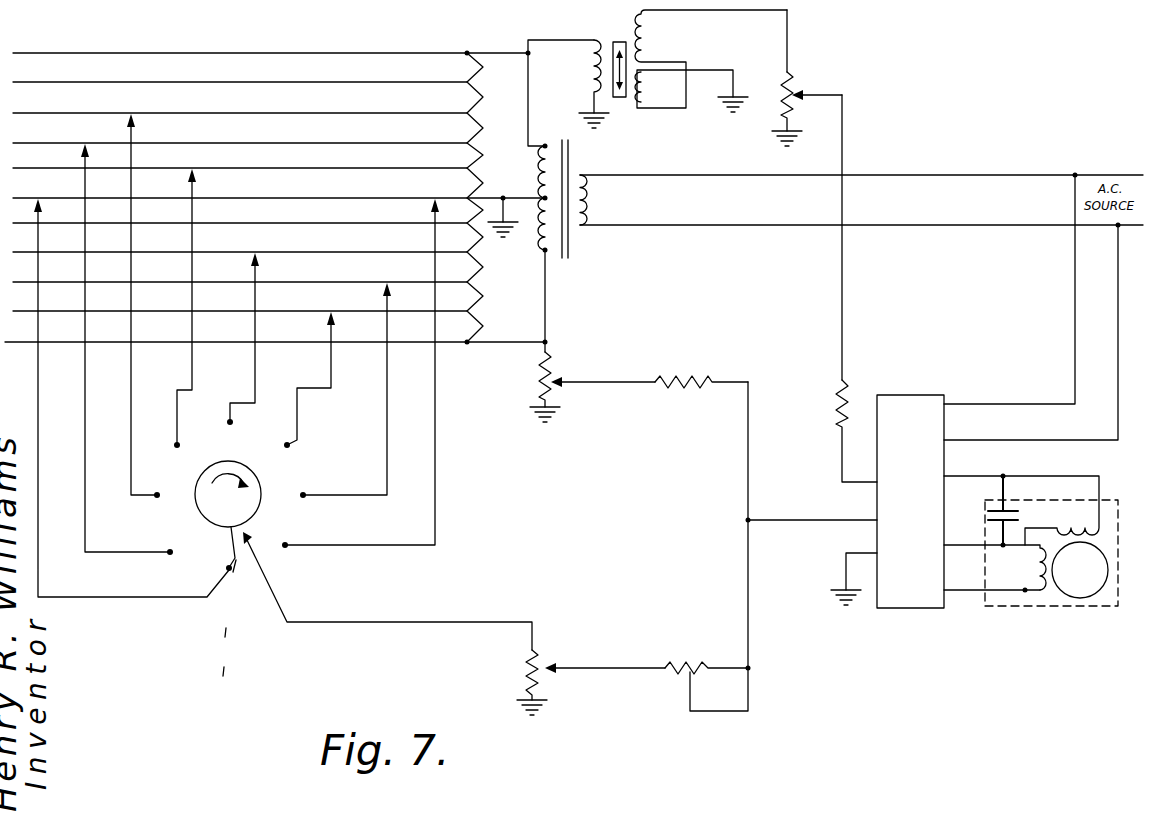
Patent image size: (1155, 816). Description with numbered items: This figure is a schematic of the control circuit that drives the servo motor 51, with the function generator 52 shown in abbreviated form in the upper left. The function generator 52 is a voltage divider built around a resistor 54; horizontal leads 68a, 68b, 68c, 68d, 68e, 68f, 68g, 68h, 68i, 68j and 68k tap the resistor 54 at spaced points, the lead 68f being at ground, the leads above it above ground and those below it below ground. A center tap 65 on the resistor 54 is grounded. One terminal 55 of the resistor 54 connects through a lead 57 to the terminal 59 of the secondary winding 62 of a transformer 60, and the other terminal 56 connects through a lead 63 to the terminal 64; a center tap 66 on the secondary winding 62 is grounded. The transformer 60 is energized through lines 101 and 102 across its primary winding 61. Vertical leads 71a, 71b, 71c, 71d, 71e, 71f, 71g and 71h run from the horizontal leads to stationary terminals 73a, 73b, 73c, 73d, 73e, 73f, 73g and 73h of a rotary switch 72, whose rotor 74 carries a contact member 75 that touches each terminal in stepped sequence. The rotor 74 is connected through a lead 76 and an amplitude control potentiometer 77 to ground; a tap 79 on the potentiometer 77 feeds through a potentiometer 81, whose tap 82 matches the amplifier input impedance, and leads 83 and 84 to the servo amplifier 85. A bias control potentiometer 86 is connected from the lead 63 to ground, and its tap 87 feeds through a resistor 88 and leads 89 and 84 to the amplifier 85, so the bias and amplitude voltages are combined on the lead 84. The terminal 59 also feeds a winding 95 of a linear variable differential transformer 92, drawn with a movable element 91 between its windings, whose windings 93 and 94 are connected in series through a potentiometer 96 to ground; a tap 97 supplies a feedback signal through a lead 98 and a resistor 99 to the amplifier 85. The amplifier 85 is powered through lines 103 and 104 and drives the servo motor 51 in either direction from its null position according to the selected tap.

The servo motor 51 is at (1119, 550).
The function generator 52 is at (302, 46).
The resistor 54 is at (486, 150).
The terminal 55 is at (470, 52).
The terminal 56 is at (472, 341).
The lead 57 is at (528, 103).
The terminal 59 is at (546, 145).
The transformer 60 is at (582, 199).
The primary winding 61 is at (592, 193).
The secondary winding 62 is at (552, 254).
The lead 63 is at (548, 306).
The terminal 64 is at (543, 258).
The center tap 65 is at (502, 196).
The center tap 66 is at (543, 197).
The horizontal lead 68a is at (405, 52).
The horizontal lead 68b is at (395, 81).
The horizontal lead 68c is at (390, 112).
The horizontal lead 68d is at (388, 142).
The horizontal lead 68e is at (385, 167).
The horizontal lead 68f is at (385, 197).
The horizontal lead 68g is at (378, 222).
The horizontal lead 68h is at (376, 251).
The horizontal lead 68i is at (389, 281).
The horizontal lead 68j is at (389, 310).
The horizontal lead 68k is at (386, 341).
The lead 71a is at (40, 386).
The lead 71b is at (87, 388).
The lead 71c is at (133, 371).
The lead 71d is at (194, 372).
The lead 71e is at (258, 370).
The lead 71f is at (333, 369).
The lead 71g is at (389, 375).
The lead 71h is at (437, 372).
The rotary switch 72 is at (228, 494).
The terminal 73a is at (235, 572).
The terminal 73b is at (172, 552).
The terminal 73c is at (158, 496).
The terminal 73d is at (178, 446).
The terminal 73e is at (231, 423).
The terminal 73f is at (289, 446).
The terminal 73g is at (303, 496).
The terminal 73h is at (285, 546).
The rotor 74 is at (260, 482).
The contact member 75 is at (226, 562).
The lead 76 is at (405, 622).
The amplitude control potentiometer 77 is at (527, 670).
The tap 79 is at (554, 665).
The potentiometer 81 is at (689, 664).
The tap 82 is at (692, 686).
The lead 83 is at (750, 576).
The lead 84 is at (796, 520).
The servo amplifier 85 is at (887, 501).
The bias control potentiometer 86 is at (540, 372).
The tap 87 is at (560, 380).
The resistor 88 is at (682, 378).
The lead 89 is at (750, 456).
The movable armature 91 is at (619, 97).
The linear variable differential transformer 92 is at (616, 54).
The winding 93 is at (650, 27).
The winding 94 is at (655, 87).
The winding 95 is at (590, 68).
The potentiometer 96 is at (784, 103).
The tap 97 is at (799, 92).
The lead 98 is at (844, 295).
The resistor 99 is at (843, 385).
The electrical line 101 is at (938, 175).
The electrical line 102 is at (938, 224).
The line 103 is at (993, 404).
The line 104 is at (1000, 440).